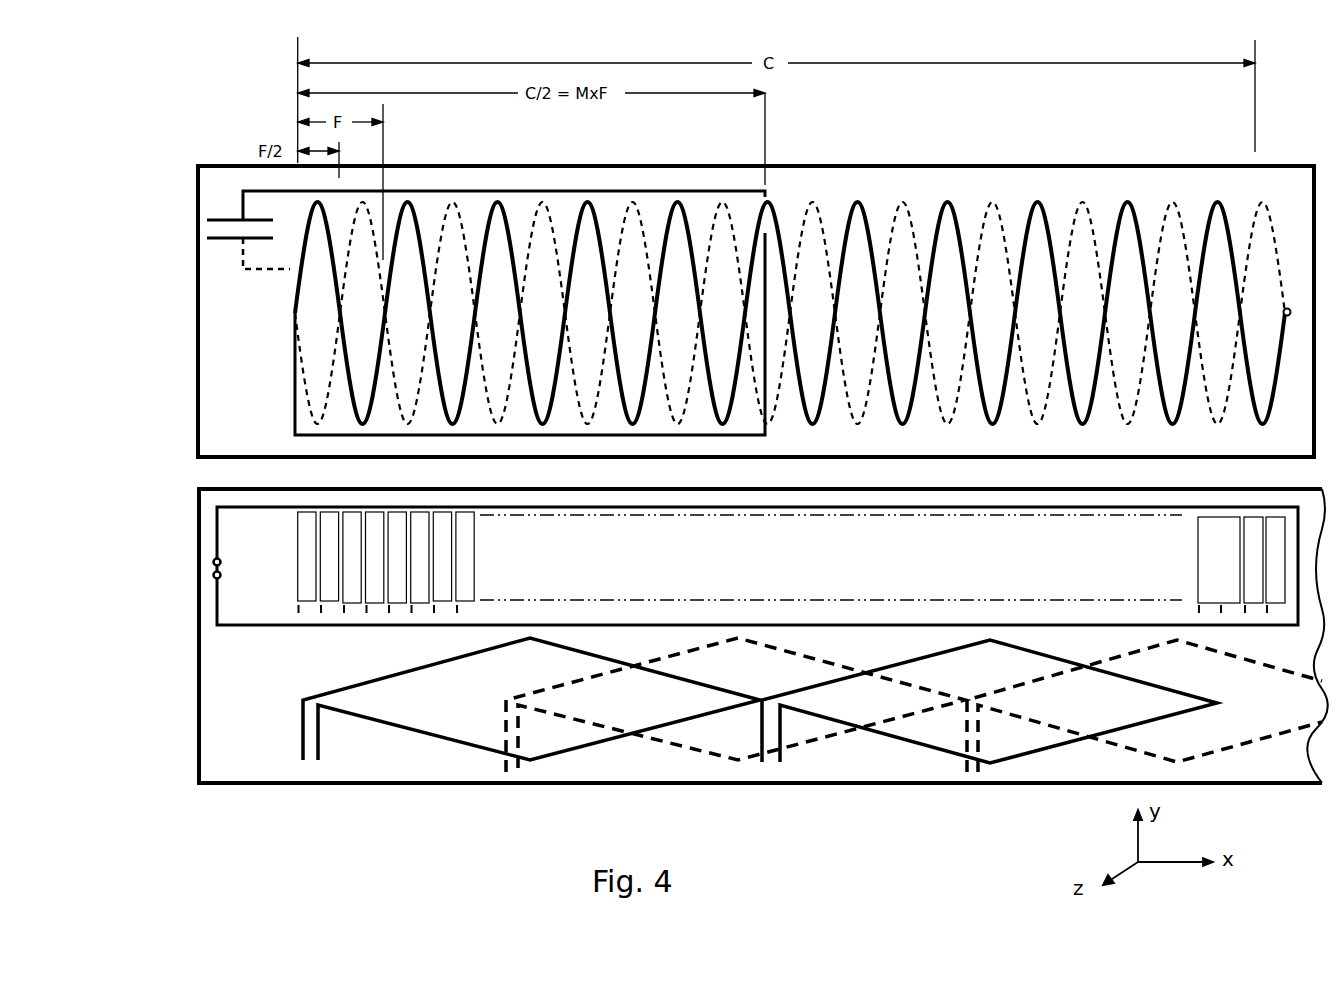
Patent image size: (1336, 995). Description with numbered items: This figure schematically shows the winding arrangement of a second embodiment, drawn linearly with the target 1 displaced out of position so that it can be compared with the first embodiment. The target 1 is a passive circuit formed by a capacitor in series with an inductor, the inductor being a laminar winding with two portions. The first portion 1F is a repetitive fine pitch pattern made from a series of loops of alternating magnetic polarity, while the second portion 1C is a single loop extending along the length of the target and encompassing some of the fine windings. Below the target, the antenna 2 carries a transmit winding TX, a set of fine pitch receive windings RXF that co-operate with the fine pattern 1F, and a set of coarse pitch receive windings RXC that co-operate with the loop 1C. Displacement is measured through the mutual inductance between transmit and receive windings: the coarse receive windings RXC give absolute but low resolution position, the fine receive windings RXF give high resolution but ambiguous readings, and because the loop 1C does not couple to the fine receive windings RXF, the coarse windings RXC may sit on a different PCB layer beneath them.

The target 1 is at (243, 345).
The first portion of target winding 1F is at (377, 313).
The second portion of target winding 1C is at (290, 408).
The antenna 2 is at (275, 659).
The transmit winding TX is at (213, 548).
The fine pitch receive windings RXF is at (303, 542).
The coarse pitch receive windings RXC is at (367, 703).